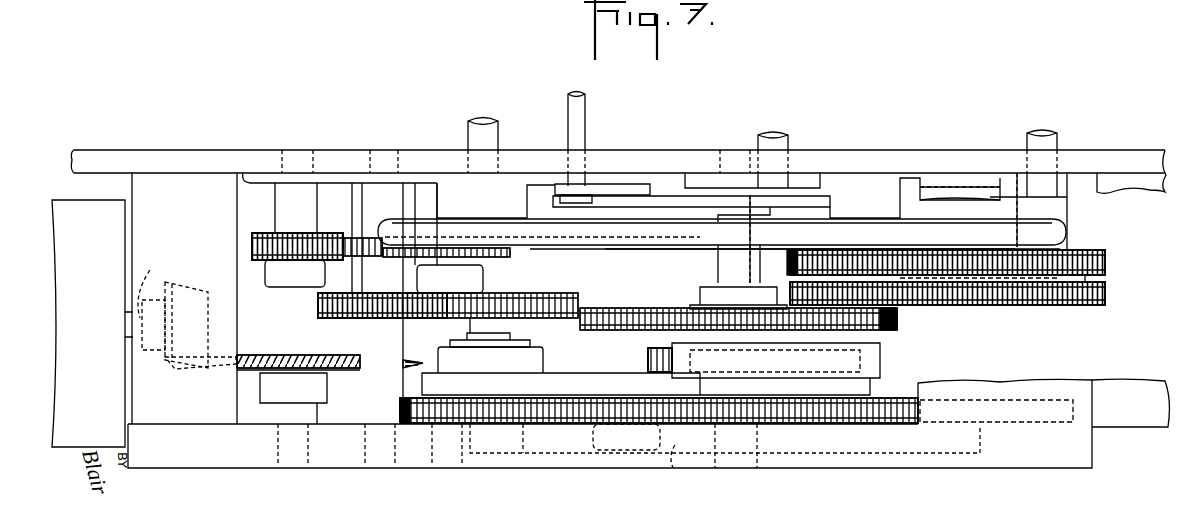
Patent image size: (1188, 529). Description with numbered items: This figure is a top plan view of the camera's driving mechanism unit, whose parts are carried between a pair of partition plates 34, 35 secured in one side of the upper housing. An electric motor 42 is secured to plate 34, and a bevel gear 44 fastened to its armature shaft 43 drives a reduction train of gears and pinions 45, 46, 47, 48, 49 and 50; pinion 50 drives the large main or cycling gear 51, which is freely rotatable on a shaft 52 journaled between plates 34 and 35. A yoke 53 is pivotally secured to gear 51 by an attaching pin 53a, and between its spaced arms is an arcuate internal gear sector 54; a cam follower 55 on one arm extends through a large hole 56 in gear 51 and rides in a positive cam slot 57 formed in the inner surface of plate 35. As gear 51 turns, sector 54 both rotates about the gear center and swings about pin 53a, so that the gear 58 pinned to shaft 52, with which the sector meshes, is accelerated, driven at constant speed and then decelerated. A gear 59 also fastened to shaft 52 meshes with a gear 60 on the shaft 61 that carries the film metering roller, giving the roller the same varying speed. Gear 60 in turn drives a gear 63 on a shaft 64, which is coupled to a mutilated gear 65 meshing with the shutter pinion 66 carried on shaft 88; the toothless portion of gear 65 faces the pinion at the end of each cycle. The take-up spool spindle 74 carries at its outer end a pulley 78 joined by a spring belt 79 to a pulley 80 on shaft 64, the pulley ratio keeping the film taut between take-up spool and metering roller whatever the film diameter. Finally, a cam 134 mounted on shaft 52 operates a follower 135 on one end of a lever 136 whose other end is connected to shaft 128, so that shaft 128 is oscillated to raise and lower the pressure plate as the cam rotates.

The plate 34 is at (893, 152).
The plate 35 is at (800, 463).
The electric motor 42 is at (95, 215).
The armature shaft 43 is at (148, 285).
The bevel gear 44 is at (190, 284).
The gear 45 is at (212, 368).
The gear 46 is at (280, 262).
The gear 47 is at (268, 240).
The gear 48 is at (358, 310).
The gear 49 is at (540, 304).
The pinion 50 is at (412, 385).
The main or cycling gear 51 is at (556, 450).
The shaft 52 is at (740, 258).
The yoke 53 is at (575, 386).
The attaching pin 53a is at (515, 337).
The arcuate internal gear sector 54 is at (875, 358).
The cam follower 55 is at (610, 440).
The hole 56 is at (533, 410).
The cam slot 57 is at (677, 447).
The gear 58 is at (648, 355).
The gear 59 is at (897, 322).
The gear 60 is at (705, 285).
The shaft 61 is at (780, 142).
The gear 63 is at (1030, 298).
The shaft 64 is at (905, 205).
The mutilated gear 65 is at (1107, 262).
The shutter pinion 66 is at (1068, 251).
The take-up spool spindle 74 is at (493, 136).
The pulley 78 is at (398, 223).
The spring belt 79 is at (613, 233).
The pulley 80 is at (1040, 222).
The shaft 88 is at (1050, 143).
The shaft 128 is at (582, 124).
The cam 134 is at (668, 196).
The follower 135 is at (636, 203).
The lever 136 is at (598, 190).